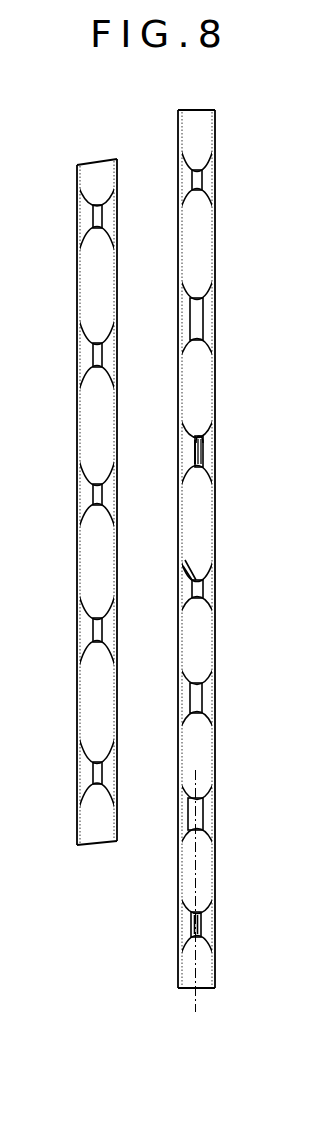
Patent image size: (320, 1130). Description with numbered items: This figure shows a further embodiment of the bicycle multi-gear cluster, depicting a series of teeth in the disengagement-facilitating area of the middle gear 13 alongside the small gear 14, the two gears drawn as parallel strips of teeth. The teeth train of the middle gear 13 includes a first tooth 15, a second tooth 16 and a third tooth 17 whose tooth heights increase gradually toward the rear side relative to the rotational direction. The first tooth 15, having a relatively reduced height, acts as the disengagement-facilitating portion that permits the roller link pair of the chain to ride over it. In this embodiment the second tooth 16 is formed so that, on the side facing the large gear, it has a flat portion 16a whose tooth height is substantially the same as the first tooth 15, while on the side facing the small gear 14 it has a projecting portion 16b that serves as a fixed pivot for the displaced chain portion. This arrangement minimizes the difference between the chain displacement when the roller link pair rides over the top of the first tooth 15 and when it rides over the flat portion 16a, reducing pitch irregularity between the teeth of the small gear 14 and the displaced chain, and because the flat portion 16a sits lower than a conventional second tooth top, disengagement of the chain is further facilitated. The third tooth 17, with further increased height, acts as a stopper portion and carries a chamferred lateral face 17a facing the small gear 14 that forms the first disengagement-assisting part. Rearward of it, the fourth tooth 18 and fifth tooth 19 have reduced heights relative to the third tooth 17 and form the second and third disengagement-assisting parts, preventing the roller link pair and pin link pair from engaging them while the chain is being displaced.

The middle gear 13 is at (224, 121).
The small gear 14 is at (69, 164).
The first tooth 15 is at (207, 320).
The second tooth 16 is at (208, 460).
The flat portion 16a is at (204, 442).
The projecting portion 16b is at (195, 449).
The third tooth 17 is at (207, 590).
The chamferred lateral face 17a is at (183, 564).
The fourth tooth 18 is at (207, 700).
The fifth tooth 19 is at (207, 813).